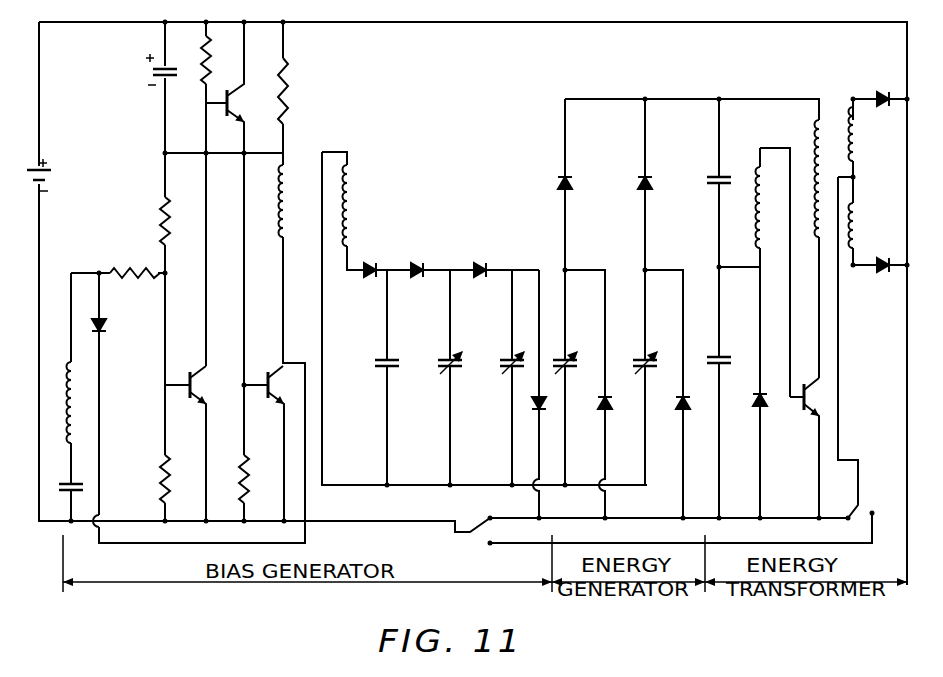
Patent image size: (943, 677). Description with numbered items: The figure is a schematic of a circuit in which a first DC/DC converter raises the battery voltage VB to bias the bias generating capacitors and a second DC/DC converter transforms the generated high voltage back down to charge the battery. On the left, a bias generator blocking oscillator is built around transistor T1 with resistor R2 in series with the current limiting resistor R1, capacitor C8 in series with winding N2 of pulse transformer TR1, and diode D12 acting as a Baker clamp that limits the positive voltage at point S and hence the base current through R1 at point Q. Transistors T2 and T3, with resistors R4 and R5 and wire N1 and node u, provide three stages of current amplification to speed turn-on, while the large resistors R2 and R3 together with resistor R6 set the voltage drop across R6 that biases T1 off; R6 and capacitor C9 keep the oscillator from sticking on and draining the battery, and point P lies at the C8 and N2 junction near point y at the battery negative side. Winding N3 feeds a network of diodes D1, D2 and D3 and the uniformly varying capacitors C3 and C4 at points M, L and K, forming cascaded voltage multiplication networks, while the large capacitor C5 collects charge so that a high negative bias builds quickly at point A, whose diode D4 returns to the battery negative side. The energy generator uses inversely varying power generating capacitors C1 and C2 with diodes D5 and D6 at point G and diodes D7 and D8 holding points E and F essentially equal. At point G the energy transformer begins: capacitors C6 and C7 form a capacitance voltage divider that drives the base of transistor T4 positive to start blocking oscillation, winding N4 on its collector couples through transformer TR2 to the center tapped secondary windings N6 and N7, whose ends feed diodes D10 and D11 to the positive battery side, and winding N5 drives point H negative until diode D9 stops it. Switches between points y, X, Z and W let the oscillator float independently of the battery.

The battery VB is at (51, 175).
The capacitor C9 is at (147, 70).
The resistor R4 is at (216, 60).
The transistor T2 is at (231, 87).
The resistor R6 is at (294, 91).
The node u is at (283, 153).
The transformer TR1 is at (300, 201).
The resistor R2 is at (178, 221).
The point S is at (97, 272).
The resistor R1 is at (135, 262).
The node Q is at (167, 274).
The wire N1 is at (257, 280).
The diode D12 is at (115, 328).
The transistor T1 is at (191, 443).
The transistor T3 is at (267, 443).
The winding N2 is at (84, 400).
The node P is at (73, 472).
The capacitor C8 is at (92, 485).
The resistor R3 is at (178, 479).
The resistor R5 is at (256, 479).
The point Y y is at (78, 525).
The winding N3 is at (359, 205).
The diode D1 is at (369, 257).
The diode D2 is at (416, 257).
The diode D3 is at (483, 257).
The point M is at (386, 270).
The node L is at (448, 270).
The node K is at (513, 270).
The capacitor C5 is at (376, 352).
The bias generating capacitor C3 is at (440, 356).
The bias generating capacitor C4 is at (502, 356).
The power generating capacitor C1 is at (561, 356).
The power generating capacitor C2 is at (637, 356).
The diode D4 is at (548, 395).
The point A is at (440, 485).
The diode D5 is at (576, 187).
The diode D6 is at (656, 187).
The point E is at (566, 270).
The point F is at (646, 270).
The diode D7 is at (615, 405).
The diode D8 is at (694, 405).
The point G is at (668, 99).
The capacitor C6 is at (707, 168).
The point H is at (719, 267).
The capacitor C7 is at (710, 351).
The winding N5 is at (743, 207).
The diode D9 is at (770, 417).
The transistor T4 is at (808, 448).
The winding N4 is at (802, 178).
The pulse transformer TR2 is at (826, 98).
The secondary winding N6 is at (865, 134).
The secondary winding N7 is at (865, 225).
The diode D10 is at (885, 86).
The diode D11 is at (885, 280).
The point X is at (858, 461).
The point W is at (776, 518).
The point Z is at (661, 518).